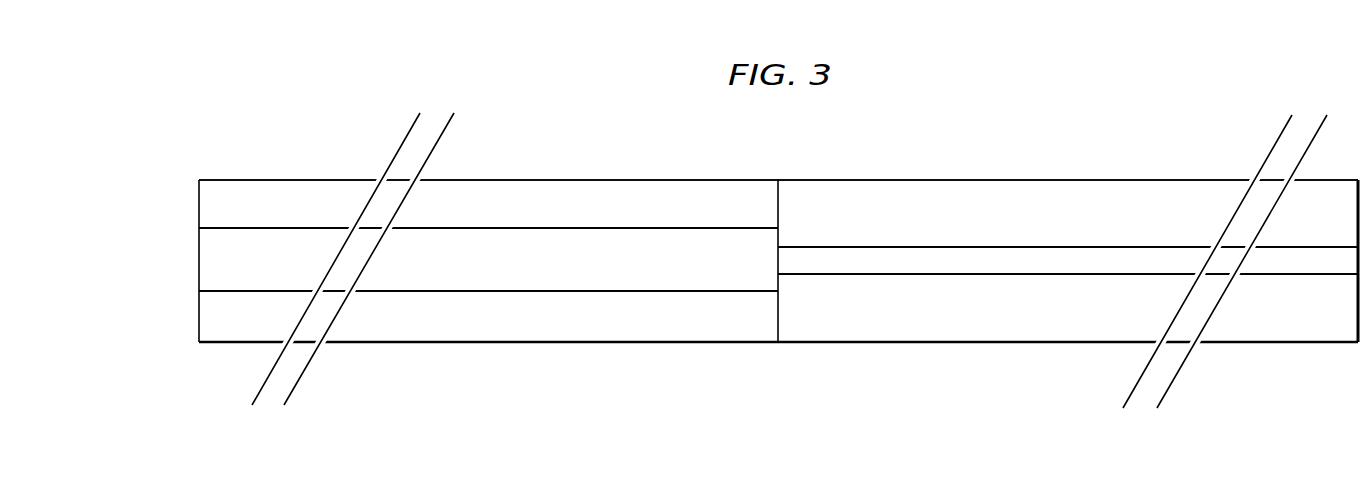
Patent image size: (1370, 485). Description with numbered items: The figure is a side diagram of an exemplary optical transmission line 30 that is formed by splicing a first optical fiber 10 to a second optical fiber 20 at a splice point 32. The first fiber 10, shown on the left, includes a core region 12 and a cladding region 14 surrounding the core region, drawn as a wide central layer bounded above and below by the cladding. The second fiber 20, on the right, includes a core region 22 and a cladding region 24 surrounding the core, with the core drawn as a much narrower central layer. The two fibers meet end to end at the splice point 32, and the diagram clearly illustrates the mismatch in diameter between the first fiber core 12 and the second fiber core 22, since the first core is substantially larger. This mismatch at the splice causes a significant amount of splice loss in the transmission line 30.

The first optical fiber 10 is at (610, 178).
The core region 12 is at (488, 259).
The cladding region 14 is at (488, 261).
The second optical fiber 20 is at (1105, 179).
The core region 22 is at (922, 263).
The cladding region 24 is at (1068, 261).
The optical transmission line 30 is at (993, 109).
The splice point 32 is at (780, 201).